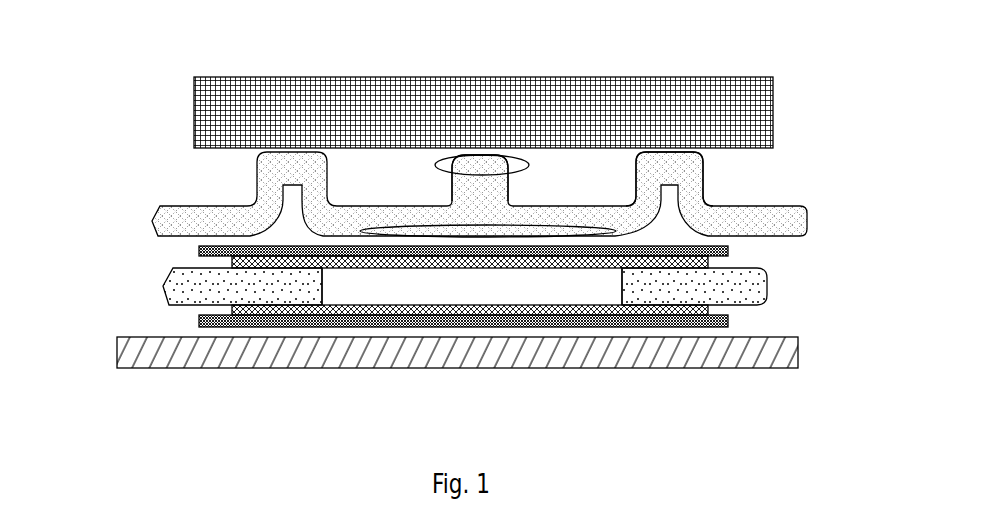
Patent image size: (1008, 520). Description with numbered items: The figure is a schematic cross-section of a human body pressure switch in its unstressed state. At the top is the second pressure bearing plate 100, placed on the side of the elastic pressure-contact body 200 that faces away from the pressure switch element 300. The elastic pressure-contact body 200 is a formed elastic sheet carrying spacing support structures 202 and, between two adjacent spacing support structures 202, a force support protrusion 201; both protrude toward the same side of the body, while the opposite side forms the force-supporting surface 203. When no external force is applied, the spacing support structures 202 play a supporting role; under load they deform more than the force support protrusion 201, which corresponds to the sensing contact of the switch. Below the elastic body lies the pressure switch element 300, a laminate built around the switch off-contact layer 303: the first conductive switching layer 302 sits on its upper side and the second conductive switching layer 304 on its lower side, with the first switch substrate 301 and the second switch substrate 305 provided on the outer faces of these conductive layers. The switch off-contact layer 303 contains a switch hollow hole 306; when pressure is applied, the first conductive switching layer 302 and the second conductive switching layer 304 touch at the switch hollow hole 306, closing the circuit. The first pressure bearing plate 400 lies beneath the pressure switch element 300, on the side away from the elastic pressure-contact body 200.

The second pressure bearing plate 100 is at (773, 108).
The elastic pressure-contact body 200 is at (795, 215).
The force support protrusion 201 is at (437, 165).
The spacing support structure 202 is at (697, 169).
The force-supporting surface 203 is at (490, 238).
The pressure switch element 300 is at (453, 301).
The first switch substrate 301 is at (199, 251).
The first conductive switching layer 302 is at (232, 262).
The switch off-contact layer 303 is at (163, 283).
The second conductive switching layer 304 is at (232, 312).
The second switch substrate 305 is at (199, 322).
The switch hollow hole 306 is at (405, 296).
The first pressure bearing plate 400 is at (577, 366).